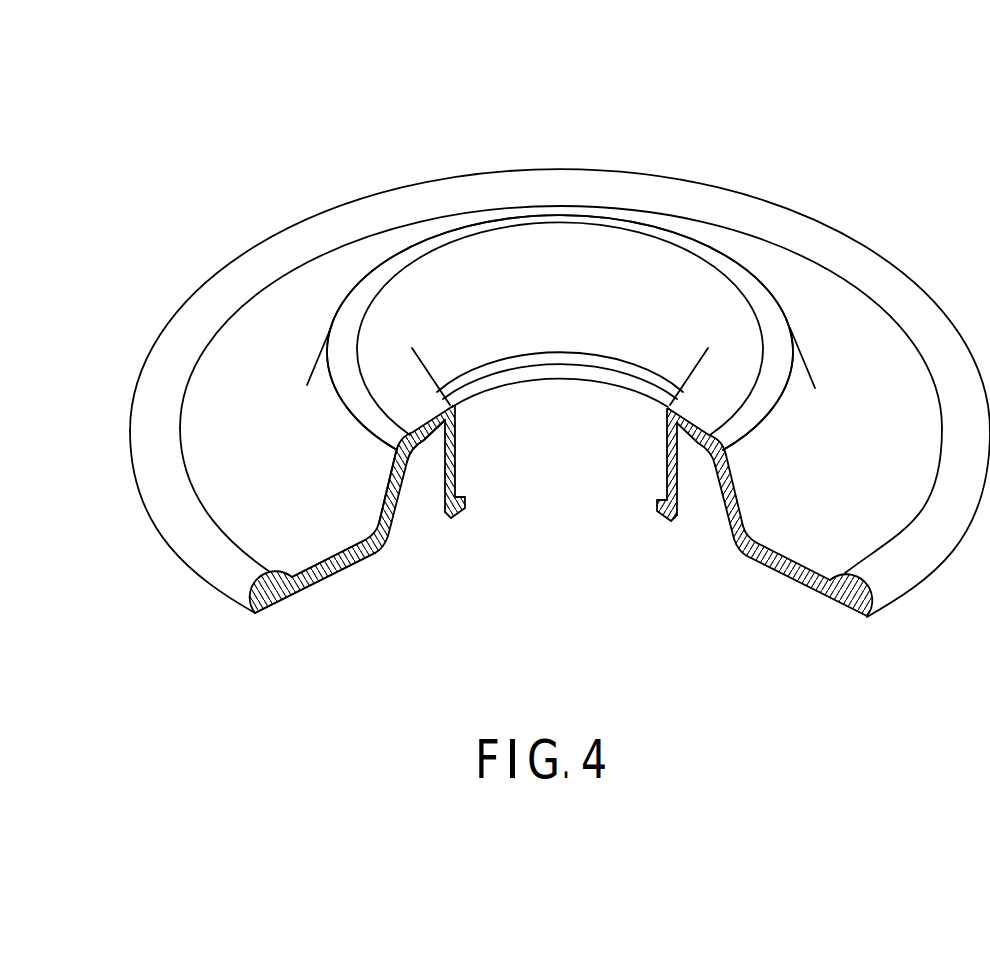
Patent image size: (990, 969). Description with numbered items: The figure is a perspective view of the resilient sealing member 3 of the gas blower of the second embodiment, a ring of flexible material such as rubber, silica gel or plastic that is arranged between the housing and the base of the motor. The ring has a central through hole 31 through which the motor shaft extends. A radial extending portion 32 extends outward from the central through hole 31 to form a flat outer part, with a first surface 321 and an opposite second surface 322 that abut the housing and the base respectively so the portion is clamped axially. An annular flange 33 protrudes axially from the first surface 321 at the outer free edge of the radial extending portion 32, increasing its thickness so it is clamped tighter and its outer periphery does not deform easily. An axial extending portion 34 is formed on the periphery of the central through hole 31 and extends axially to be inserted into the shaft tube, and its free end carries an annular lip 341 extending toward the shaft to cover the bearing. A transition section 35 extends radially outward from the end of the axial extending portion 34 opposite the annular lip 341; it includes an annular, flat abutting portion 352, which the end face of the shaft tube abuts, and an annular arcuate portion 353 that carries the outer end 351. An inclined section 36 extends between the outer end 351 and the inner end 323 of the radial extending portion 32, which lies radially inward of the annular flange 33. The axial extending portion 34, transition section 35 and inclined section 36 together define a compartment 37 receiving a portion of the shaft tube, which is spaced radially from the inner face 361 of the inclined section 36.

The resilient sealing member 3 is at (285, 170).
The central through hole 31 is at (622, 352).
The radial extending portion 32 is at (318, 583).
The first surface 321 is at (243, 390).
The second surface 322 is at (349, 596).
The inner end 323 is at (380, 555).
The annular flange 33 is at (233, 553).
The axial extending portion 34 is at (450, 513).
The annular lip 341 is at (463, 512).
The transition section 35 is at (470, 432).
The outer end 351 is at (397, 465).
The annular, flat abutting portion 352 is at (397, 380).
The annular arcuate portion 353 is at (377, 413).
The inclined section 36 is at (385, 487).
The inner face 361 is at (404, 505).
The compartment 37 is at (437, 480).